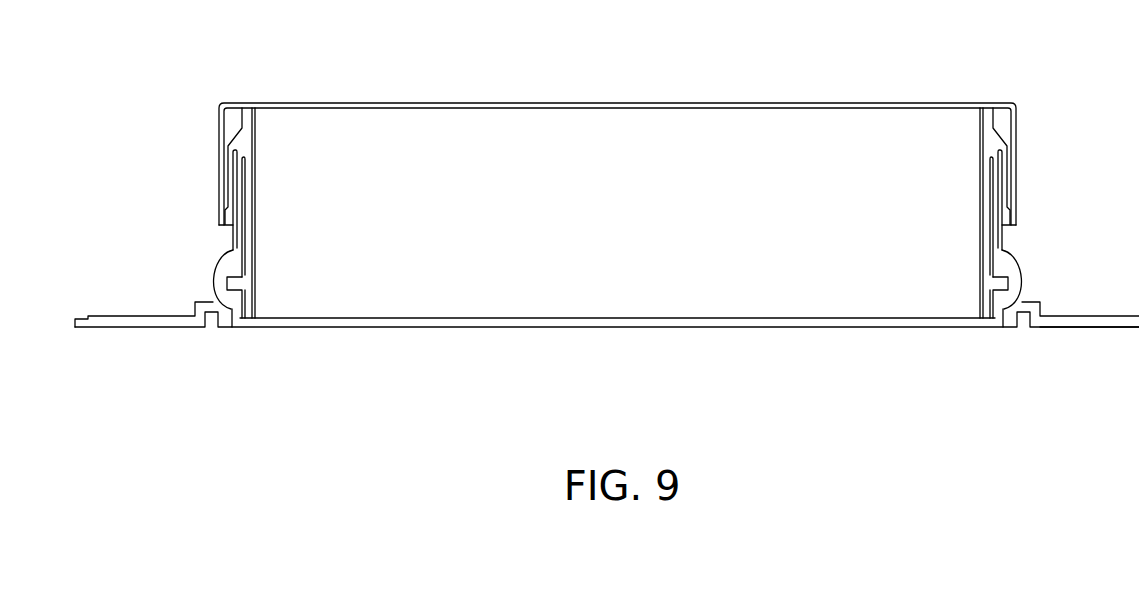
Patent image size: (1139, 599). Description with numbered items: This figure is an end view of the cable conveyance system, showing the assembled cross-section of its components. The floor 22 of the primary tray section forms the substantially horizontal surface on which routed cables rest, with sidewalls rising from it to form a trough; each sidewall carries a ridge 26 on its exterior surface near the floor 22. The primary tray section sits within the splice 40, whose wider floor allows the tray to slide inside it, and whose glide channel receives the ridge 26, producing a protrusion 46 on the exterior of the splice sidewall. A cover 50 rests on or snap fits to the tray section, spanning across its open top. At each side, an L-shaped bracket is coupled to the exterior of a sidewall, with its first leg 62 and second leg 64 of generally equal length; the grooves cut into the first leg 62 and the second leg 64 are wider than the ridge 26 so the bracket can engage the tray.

The cover 50 is at (336, 103).
The floor 22 is at (374, 318).
The splice 40 is at (501, 328).
The ridge 26 is at (1002, 328).
The first leg 62 is at (121, 316).
The protrusion 46 is at (1062, 328).
The second leg 64 is at (231, 251).